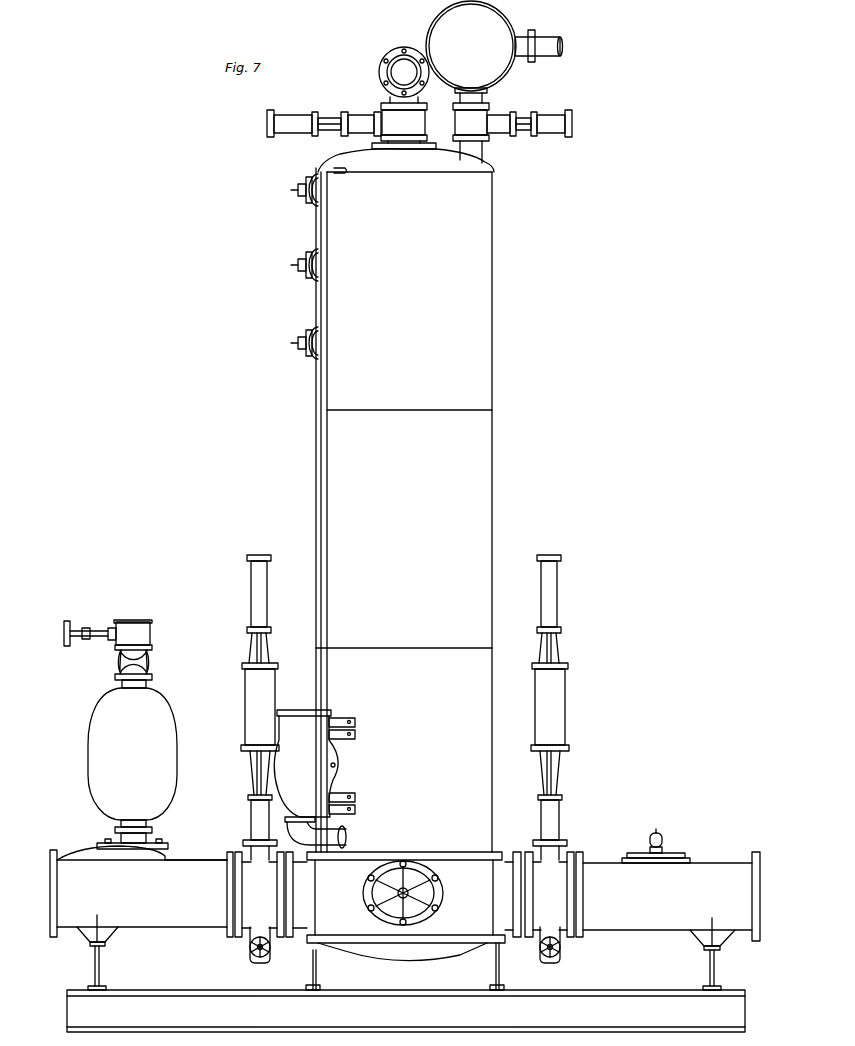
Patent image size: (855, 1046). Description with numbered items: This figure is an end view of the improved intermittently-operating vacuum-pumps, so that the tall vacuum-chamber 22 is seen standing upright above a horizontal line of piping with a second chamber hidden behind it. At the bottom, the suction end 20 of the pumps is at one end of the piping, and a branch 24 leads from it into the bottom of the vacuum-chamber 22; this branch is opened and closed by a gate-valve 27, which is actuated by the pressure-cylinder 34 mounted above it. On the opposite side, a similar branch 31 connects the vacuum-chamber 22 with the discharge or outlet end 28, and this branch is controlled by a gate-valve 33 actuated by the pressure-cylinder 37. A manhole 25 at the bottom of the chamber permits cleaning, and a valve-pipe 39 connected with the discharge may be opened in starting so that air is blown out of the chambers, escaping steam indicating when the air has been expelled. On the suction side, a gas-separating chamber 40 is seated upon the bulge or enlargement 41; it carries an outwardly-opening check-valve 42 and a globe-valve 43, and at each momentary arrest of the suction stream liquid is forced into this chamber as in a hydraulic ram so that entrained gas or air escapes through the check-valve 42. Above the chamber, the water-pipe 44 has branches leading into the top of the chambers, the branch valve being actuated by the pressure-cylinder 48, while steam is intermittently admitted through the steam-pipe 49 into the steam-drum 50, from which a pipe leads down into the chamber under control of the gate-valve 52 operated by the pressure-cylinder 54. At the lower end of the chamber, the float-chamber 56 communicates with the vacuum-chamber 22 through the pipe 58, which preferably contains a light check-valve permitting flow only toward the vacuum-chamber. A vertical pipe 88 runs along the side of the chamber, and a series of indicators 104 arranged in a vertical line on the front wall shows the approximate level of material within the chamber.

The suction end 20 is at (39, 893).
The vacuum-chamber 22 is at (405, 566).
The branch 24 is at (182, 921).
The manhole 25 is at (415, 893).
The valve 27 is at (247, 895).
The discharge or outlet end 28 is at (767, 896).
The branch 31 is at (628, 921).
The valve 33 is at (558, 893).
The pressure-cylinder 34 is at (250, 697).
The pressure-cylinder 37 is at (559, 697).
The valve-pipe 39 is at (656, 839).
The gas-separating chamber 40 is at (132, 761).
The bulge or enlargement 41 is at (110, 851).
The check-valve 42 is at (144, 659).
The globe-valve 43 is at (118, 633).
The water-pipe 44 is at (404, 90).
The pressure-cylinder 48 is at (324, 117).
The steam-pipe 49 is at (540, 43).
The steam-drum 50 is at (471, 52).
The controlling-valve 52 is at (481, 130).
The pressure-cylinder 54 is at (541, 117).
The float-chamber 56 is at (314, 763).
The pipe 58 is at (346, 835).
The pipe 88 is at (330, 385).
The indicator 104 is at (305, 216).